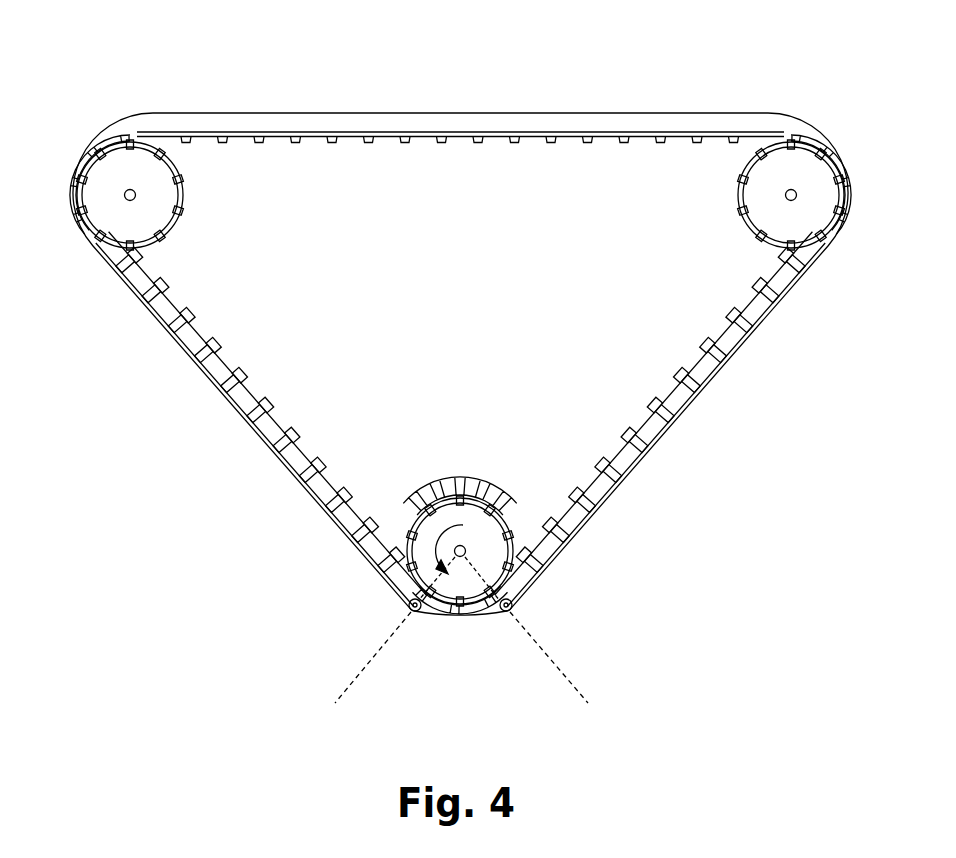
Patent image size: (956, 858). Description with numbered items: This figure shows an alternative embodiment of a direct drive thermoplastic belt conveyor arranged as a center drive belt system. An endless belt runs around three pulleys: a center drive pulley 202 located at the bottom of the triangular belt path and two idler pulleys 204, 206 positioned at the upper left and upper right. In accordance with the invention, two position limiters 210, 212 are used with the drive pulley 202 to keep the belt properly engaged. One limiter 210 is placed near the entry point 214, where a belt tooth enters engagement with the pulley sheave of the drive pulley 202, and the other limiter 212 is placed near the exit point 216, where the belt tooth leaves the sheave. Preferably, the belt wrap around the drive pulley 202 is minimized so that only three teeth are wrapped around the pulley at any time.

The center drive pulley 202 is at (460, 558).
The idler pulley 204 is at (130, 175).
The idler pulley 206 is at (792, 175).
The position limiter 210 is at (407, 606).
The position limiter 212 is at (514, 605).
The entry point 214 is at (355, 677).
The exit point 216 is at (578, 688).